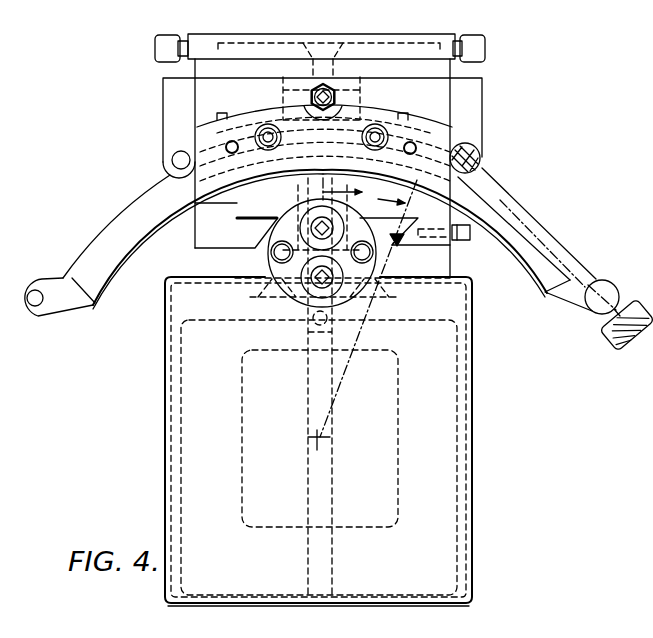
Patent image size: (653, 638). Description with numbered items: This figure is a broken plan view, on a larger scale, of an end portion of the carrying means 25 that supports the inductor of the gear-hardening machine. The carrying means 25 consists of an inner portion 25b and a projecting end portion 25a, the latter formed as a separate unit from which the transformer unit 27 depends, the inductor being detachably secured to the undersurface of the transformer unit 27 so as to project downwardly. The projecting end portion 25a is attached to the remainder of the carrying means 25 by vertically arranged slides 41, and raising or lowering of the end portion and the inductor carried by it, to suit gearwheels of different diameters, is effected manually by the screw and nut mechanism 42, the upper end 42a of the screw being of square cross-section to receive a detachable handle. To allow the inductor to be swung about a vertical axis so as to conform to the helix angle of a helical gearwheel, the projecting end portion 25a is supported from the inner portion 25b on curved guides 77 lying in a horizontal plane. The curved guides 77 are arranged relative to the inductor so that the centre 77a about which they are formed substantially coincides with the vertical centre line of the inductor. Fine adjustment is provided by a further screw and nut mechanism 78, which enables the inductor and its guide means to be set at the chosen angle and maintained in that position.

The carrying means 25 is at (457, 73).
The projecting end portion 25a is at (458, 544).
The inner portion 25b is at (197, 61).
The transformer unit 27 is at (384, 516).
The slides 41 is at (248, 222).
The screw and nut mechanism 42 is at (313, 218).
The upper end of the screw 42a is at (312, 230).
The curved guides 77 is at (310, 229).
The centre of the curved guides 77a is at (316, 438).
The screw and nut mechanism 78 is at (604, 281).